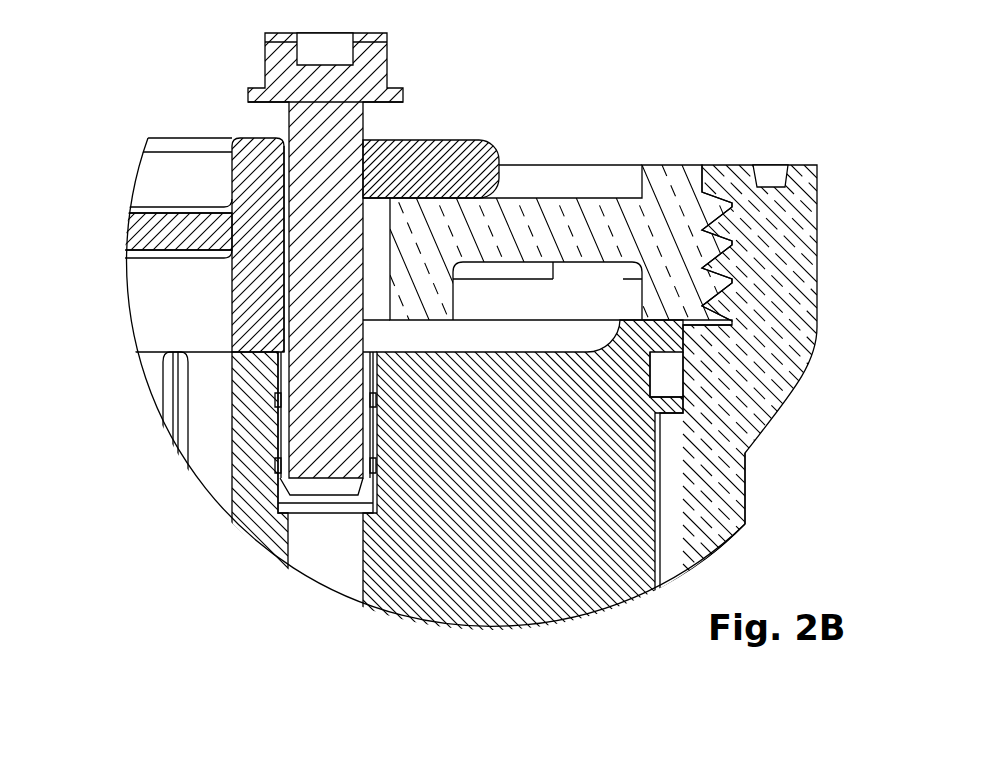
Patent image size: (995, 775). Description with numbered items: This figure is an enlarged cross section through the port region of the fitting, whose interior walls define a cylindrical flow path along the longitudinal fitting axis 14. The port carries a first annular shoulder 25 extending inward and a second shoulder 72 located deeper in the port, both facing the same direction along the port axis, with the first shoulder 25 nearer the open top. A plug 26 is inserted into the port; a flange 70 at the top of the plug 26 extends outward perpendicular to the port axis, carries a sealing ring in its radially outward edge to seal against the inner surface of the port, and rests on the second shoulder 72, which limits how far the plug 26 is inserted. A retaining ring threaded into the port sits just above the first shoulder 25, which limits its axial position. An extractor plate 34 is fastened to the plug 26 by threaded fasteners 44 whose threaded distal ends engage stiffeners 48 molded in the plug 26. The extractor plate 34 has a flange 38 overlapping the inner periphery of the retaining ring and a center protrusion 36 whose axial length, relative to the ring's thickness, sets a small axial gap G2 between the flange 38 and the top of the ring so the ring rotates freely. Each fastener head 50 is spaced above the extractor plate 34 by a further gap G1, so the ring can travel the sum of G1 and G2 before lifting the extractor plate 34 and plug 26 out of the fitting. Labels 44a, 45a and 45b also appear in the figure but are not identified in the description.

The longitudinal fitting axis 14 is at (744, 495).
The first annular shoulder 25 is at (690, 322).
The plug 26 is at (360, 540).
The extractor plate 34 is at (165, 137).
The center protrusion 36 is at (252, 295).
The extractor plate flange 38 is at (460, 198).
The threaded fastener 44 is at (284, 135).
The clamp plate bore 44a is at (285, 247).
The upper seal 45a is at (422, 150).
The lower block 45b is at (362, 575).
The stiffener 48 is at (253, 493).
The fastener head 50 is at (275, 52).
The plug flange 70 is at (662, 340).
The second shoulder 72 is at (685, 412).
The gap G1 is at (395, 118).
The axial gap G2 is at (500, 198).